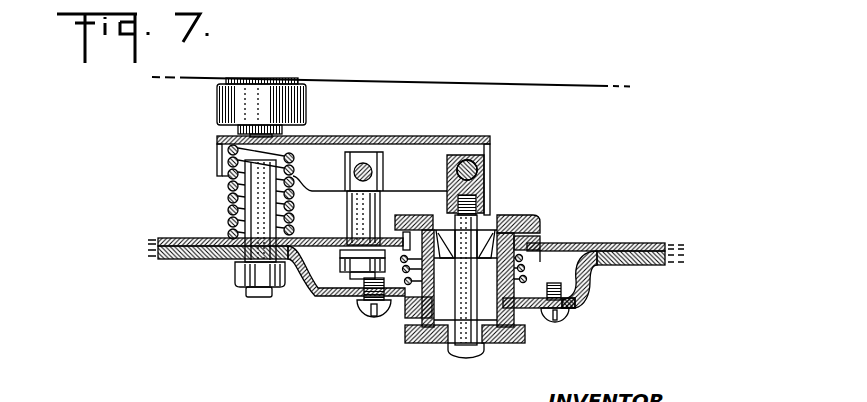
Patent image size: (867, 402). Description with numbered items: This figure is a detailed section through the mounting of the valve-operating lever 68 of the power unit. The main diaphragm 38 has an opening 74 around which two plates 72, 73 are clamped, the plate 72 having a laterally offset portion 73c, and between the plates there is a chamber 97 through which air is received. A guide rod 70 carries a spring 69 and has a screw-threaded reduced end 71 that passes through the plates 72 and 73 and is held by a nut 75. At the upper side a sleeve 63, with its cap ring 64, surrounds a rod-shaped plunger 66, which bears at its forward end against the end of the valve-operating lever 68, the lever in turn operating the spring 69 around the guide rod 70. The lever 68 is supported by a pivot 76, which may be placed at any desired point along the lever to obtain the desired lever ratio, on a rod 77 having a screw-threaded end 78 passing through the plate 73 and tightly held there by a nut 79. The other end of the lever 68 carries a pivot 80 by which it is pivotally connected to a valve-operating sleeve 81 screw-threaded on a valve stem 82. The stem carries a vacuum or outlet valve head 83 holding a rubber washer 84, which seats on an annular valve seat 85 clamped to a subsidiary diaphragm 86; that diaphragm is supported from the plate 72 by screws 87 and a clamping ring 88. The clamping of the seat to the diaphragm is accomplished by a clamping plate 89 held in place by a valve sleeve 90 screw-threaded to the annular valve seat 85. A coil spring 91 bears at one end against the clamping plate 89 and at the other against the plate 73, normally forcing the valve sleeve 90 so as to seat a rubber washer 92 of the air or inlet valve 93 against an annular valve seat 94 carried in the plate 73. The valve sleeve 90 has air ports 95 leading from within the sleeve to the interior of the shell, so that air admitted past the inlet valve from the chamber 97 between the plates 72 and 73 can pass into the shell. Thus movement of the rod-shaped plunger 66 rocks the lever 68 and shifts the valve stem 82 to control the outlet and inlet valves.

The main diaphragm 38 is at (160, 247).
The sleeve 63 is at (246, 80).
The cap ring 64 is at (222, 100).
The rod-shaped plunger 66 is at (236, 129).
The valve-operating lever 68 is at (330, 137).
The spring 69 is at (228, 162).
The guide rod 70 is at (250, 194).
The screw-threaded reduced end 71 is at (258, 295).
The plate 72 is at (178, 258).
The plate 73 is at (178, 238).
The laterally offset portion 73c is at (598, 278).
The opening 74 is at (590, 247).
The nut 75 is at (240, 275).
The pivot 76 is at (352, 170).
The rod 77 is at (352, 207).
The screw-threaded end 78 is at (348, 262).
The nut 79 is at (345, 256).
The pivot 80 is at (450, 165).
The valve-operating sleeve 81 is at (488, 181).
The valve stem 82 is at (463, 345).
The vacuum or outlet valve head 83 is at (490, 346).
The rubber washer 84 is at (508, 345).
The annular valve seat 85 is at (400, 318).
The subsidiary diaphragm 86 is at (403, 291).
The screws 87 is at (362, 314).
The clamping ring 88 is at (575, 306).
The clamping plate 89 is at (527, 310).
The valve sleeve 90 is at (520, 278).
The coil spring 91 is at (543, 262).
The rubber washer 92 is at (522, 233).
The air valve or inlet valve 93 is at (408, 222).
The annular valve seat 94 is at (530, 237).
The air ports 95 is at (441, 230).
The chamber 97 is at (573, 275).